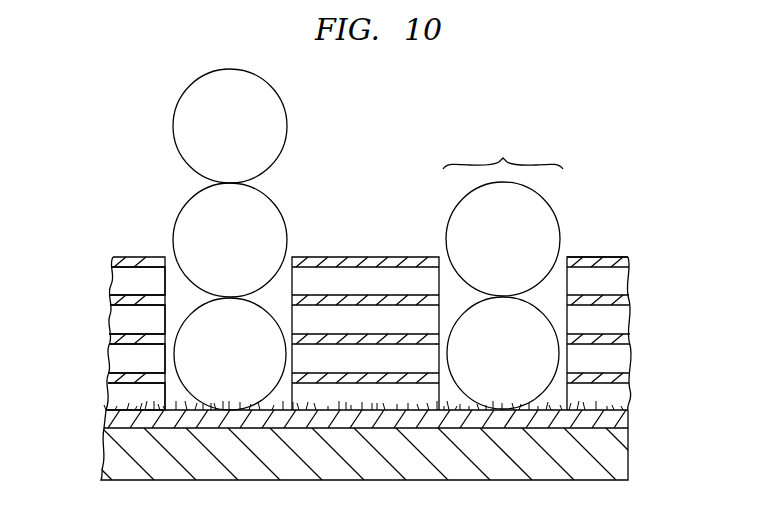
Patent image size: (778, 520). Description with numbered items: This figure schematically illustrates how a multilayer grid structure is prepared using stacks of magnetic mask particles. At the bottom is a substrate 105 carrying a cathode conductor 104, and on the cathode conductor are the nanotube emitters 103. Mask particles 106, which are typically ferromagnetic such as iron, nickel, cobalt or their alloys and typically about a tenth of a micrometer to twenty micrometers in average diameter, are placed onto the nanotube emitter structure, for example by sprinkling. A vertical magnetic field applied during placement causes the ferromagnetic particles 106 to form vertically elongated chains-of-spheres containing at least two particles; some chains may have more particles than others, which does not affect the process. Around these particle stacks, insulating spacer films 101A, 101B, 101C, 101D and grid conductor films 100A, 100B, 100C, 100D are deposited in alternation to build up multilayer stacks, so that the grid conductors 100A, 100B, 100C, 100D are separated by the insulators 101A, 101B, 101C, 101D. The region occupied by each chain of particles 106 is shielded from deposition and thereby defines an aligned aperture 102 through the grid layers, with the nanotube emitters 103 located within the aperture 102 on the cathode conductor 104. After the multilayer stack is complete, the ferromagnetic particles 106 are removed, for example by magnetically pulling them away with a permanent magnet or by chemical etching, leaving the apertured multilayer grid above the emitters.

The grid conductor 100A is at (629, 377).
The grid conductor 100B is at (629, 338).
The grid conductor 100C is at (630, 300).
The grid conductor 100D is at (630, 260).
The insulator 101A is at (105, 400).
The insulator 101B is at (107, 357).
The insulator 101C is at (110, 318).
The insulator 101D is at (112, 282).
The aperture 102 is at (503, 151).
The nanotube emitter 103 is at (187, 405).
The cathode conductor 104 is at (628, 414).
The substrate 105 is at (100, 443).
The mask particle 106 is at (282, 212).